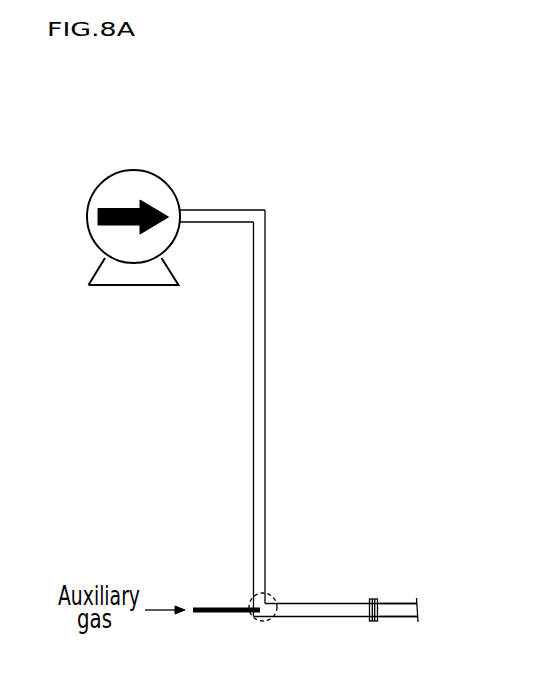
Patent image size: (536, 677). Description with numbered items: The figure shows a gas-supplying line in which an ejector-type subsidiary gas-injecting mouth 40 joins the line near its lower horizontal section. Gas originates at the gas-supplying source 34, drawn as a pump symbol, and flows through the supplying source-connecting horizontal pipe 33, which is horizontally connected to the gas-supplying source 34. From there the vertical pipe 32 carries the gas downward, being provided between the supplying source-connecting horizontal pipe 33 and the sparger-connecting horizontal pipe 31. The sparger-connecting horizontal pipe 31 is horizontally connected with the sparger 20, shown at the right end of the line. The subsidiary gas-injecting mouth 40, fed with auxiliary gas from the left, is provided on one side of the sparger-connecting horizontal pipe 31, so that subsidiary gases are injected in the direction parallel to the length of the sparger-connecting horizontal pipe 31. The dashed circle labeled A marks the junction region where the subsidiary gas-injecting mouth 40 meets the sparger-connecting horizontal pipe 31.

The sparger 20 is at (403, 607).
The sparger-connecting horizontal pipe 31 is at (315, 617).
The vertical pipe 32 is at (258, 360).
The supplying source-connecting horizontal pipe 33 is at (227, 208).
The gas-supplying source 34 is at (130, 170).
The subsidiary gas-injecting mouth 40 is at (217, 613).
The detail region A is at (276, 598).